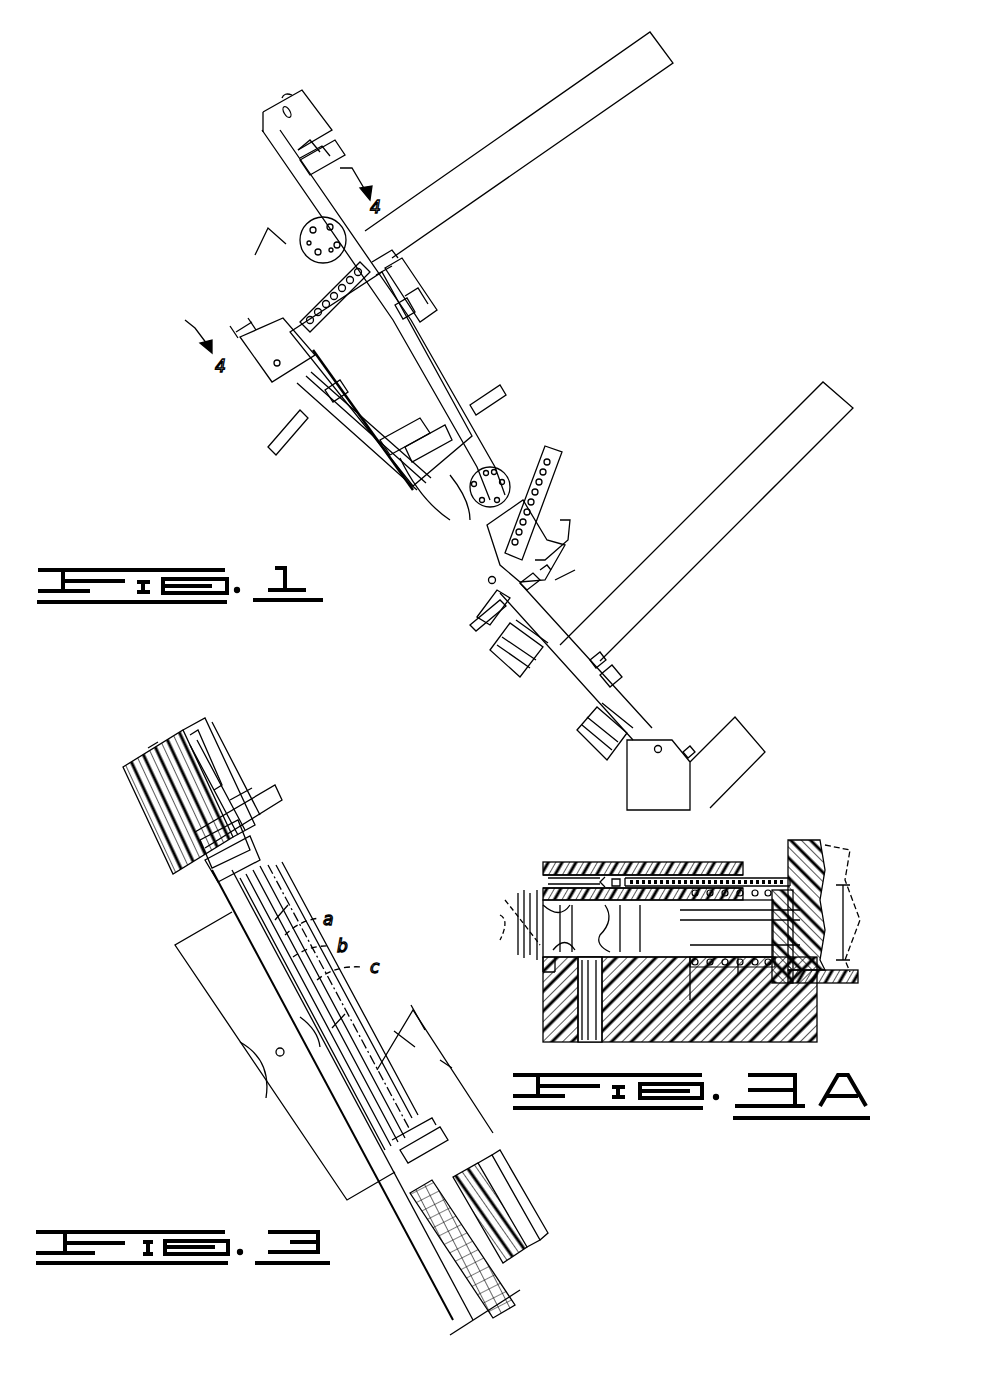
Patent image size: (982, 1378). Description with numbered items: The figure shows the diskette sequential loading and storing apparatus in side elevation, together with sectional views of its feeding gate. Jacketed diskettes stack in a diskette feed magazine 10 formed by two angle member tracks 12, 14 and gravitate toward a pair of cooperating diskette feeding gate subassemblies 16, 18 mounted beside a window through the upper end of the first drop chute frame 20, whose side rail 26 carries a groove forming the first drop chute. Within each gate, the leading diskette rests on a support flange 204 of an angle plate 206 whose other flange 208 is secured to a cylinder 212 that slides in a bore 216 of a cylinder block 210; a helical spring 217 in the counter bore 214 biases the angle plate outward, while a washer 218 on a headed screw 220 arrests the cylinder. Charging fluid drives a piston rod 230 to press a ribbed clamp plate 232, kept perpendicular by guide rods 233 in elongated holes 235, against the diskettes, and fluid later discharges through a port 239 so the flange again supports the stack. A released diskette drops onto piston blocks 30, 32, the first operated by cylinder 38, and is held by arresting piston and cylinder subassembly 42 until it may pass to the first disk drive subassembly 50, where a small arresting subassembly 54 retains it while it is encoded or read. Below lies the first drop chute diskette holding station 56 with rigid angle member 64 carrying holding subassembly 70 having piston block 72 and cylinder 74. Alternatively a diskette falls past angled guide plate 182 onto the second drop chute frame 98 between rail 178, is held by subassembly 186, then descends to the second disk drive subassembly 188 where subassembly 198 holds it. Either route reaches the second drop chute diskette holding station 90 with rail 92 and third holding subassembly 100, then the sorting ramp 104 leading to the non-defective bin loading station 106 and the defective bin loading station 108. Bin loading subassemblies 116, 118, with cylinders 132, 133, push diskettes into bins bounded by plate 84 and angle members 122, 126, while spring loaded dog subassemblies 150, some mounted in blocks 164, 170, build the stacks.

In FIG. 1, the diskette feed magazine 10 is at (553, 74).
In FIG. 1, the angle member track 12 is at (585, 118).
In FIG. 3, the angle member track 14 is at (412, 1041).
In FIG. 1, the diskette feeding gate subassembly 16 is at (322, 113).
In FIG. 3, the diskette feeding gate subassembly 16 is at (230, 776).
In FIG. 1, the diskette feeding gate subassembly 18 is at (428, 275).
In FIG. 3, the diskette feeding gate subassembly 18 is at (506, 1190).
In FIG. 1, the first drop chute frame 20 is at (280, 168).
In FIG. 3, the first drop chute frame 20 is at (393, 1202).
In FIG. 1, the side rail 26 is at (300, 183).
In FIG. 1, the piston block 30 is at (330, 280).
In FIG. 3, the piston block 32 is at (285, 1056).
In FIG. 3, the cylinder 38 is at (250, 1070).
In FIG. 1, the diskette arresting piston and cylinder subassembly 42 is at (381, 381).
In FIG. 1, the first disk drive subassembly 50 is at (458, 384).
In FIG. 1, the first diskette arresting piston and cylinder subassembly 54 is at (488, 396).
In FIG. 1, the first drop chute diskette holding station 56 is at (488, 436).
In FIG. 1, the rigid angle member 64 is at (540, 522).
In FIG. 1, the diskette holding piston and cylinder subassembly 70 is at (508, 468).
In FIG. 1, the piston block 72 is at (425, 492).
In FIG. 1, the cylinder 74 is at (440, 516).
In FIG. 1, the plate 84 is at (568, 535).
In FIG. 1, the second drop chute diskette holding station 90 is at (446, 538).
In FIG. 1, the rail 92 is at (462, 562).
In FIG. 1, the second drop chute frame 98 is at (290, 418).
In FIG. 1, the third holding piston and cylinder subassembly 100 is at (466, 620).
In FIG. 1, the sorting ramp 104 is at (564, 676).
In FIG. 1, the non-defective diskette bin loading station 106 is at (577, 568).
In FIG. 1, the defective diskette bin loading station 108 is at (658, 744).
In FIG. 1, the first bin loading subassembly 116 is at (490, 636).
In FIG. 1, the second bin loading subassembly 118 is at (622, 762).
In FIG. 1, the angle member 122 is at (755, 498).
In FIG. 1, the angle member 126 is at (735, 700).
In FIG. 1, the cylinder 132 is at (508, 670).
In FIG. 1, the cylinder 133 is at (600, 740).
In FIG. 1, the spring loaded dog subassembly 150 is at (540, 583).
In FIG. 1, the block 164 is at (500, 604).
In FIG. 1, the block 170 is at (590, 715).
In FIG. 1, the rail 178 is at (262, 326).
In FIG. 1, the angled guide plate 182 is at (292, 382).
In FIG. 1, the diskette holding piston and cylinder subassembly 186 is at (282, 450).
In FIG. 1, the second disk drive subassembly 188 is at (366, 424).
In FIG. 1, the diskette holding piston and cylinder subassembly 198 is at (402, 460).
In FIG. 3, the support flange 204 is at (228, 898).
In FIG. 3A, the support flange 204 is at (832, 985).
In FIG. 3, the angle plate 206 is at (200, 872).
In FIG. 3A, the angle plate 206 is at (745, 985).
In FIG. 3, the flange 208 is at (200, 842).
In FIG. 3A, the flange 208 is at (780, 888).
In FIG. 1, the cylinder block 210 is at (293, 103).
In FIG. 3, the cylinder block 210 is at (128, 760).
In FIG. 3A, the cylinder block 210 is at (815, 1032).
In FIG. 3, the cylinder 212 is at (190, 730).
In FIG. 3A, the cylinder 212 is at (488, 968).
In FIG. 3, the counter bore 214 is at (245, 800).
In FIG. 3A, the counter bore 214 is at (712, 1010).
In FIG. 3, the bore 216 is at (170, 788).
In FIG. 3A, the bore 216 is at (632, 880).
In FIG. 3, the helical spring 217 is at (250, 815).
In FIG. 3A, the helical spring 217 is at (730, 870).
In FIG. 3, the washer 218 is at (505, 1262).
In FIG. 3A, the washer 218 is at (548, 970).
In FIG. 3A, the headed screw 220 is at (515, 892).
In FIG. 3A, the piston rod 230 is at (648, 1040).
In FIG. 3A, the ribbed clamp plate 232 is at (800, 840).
In FIG. 3, the guide rod 233 is at (500, 1172).
In FIG. 3A, the guide rod 233 is at (640, 870).
In FIG. 3, the elongated hole 235 is at (520, 1222).
In FIG. 3A, the elongated hole 235 is at (575, 866).
In FIG. 3A, the port 239 is at (590, 1035).